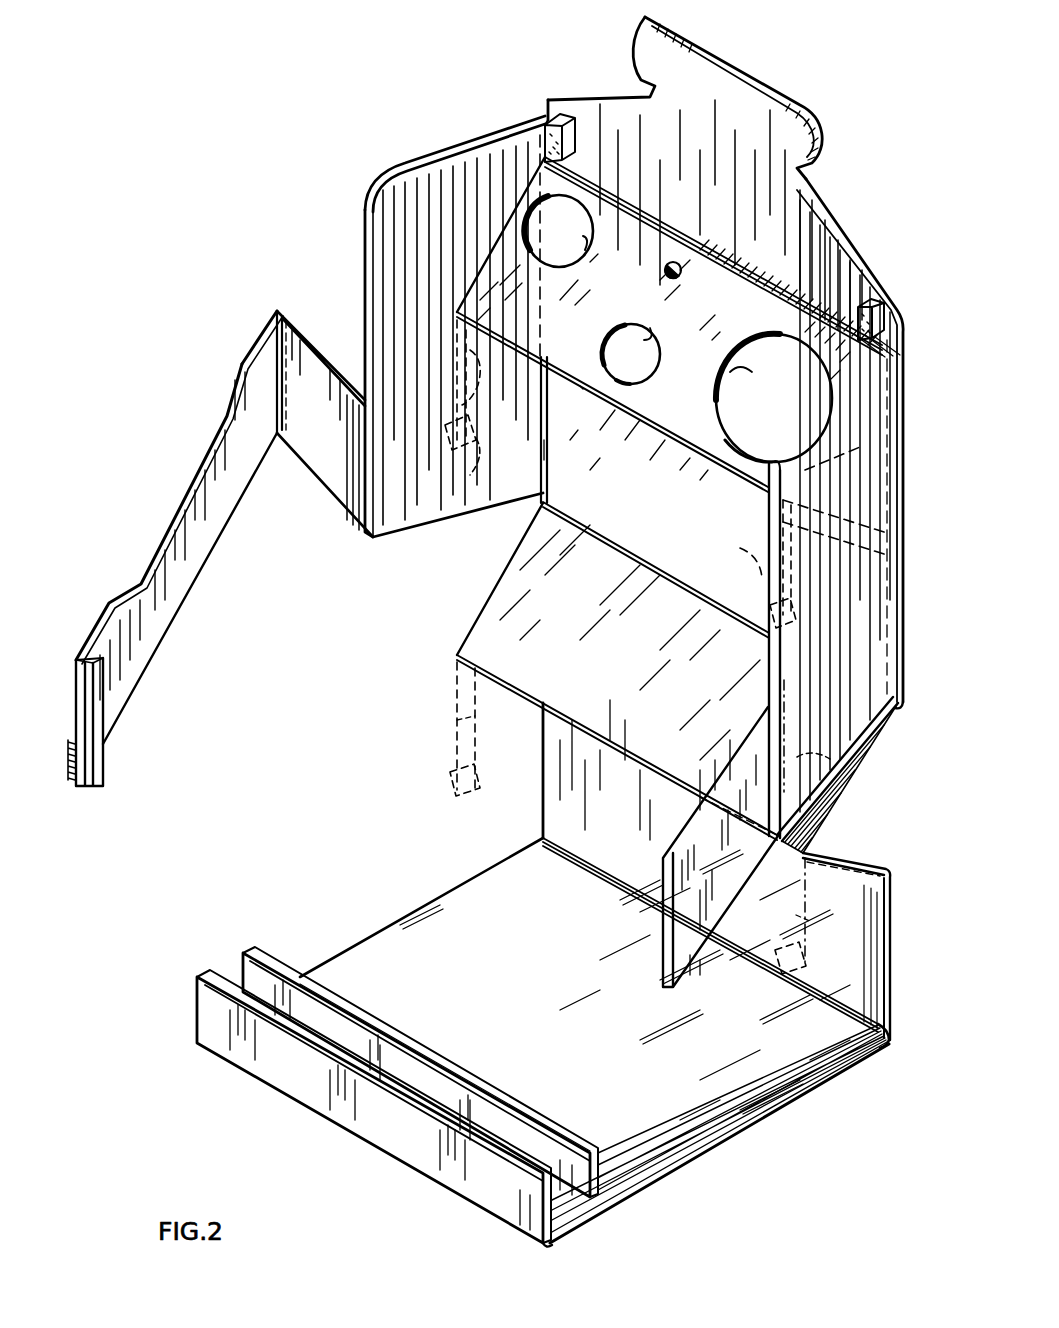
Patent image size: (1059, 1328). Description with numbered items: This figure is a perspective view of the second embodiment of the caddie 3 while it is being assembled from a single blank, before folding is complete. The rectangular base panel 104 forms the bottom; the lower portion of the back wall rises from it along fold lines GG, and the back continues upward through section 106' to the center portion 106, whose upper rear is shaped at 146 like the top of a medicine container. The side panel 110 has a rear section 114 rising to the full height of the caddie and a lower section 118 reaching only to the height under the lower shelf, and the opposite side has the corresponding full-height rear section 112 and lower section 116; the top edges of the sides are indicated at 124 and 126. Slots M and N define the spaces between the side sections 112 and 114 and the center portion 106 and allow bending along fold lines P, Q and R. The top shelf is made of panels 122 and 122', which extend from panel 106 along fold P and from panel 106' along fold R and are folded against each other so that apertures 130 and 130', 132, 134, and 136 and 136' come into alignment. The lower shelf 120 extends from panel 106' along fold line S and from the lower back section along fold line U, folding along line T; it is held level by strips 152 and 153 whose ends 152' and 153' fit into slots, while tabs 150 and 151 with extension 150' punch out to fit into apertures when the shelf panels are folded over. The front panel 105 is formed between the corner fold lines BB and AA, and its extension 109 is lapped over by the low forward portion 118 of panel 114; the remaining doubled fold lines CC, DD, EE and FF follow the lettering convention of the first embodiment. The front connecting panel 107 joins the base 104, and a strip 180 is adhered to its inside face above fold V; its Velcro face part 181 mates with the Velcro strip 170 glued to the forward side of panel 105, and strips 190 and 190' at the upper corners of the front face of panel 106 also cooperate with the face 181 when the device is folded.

The caddie 3 is at (392, 52).
The base panel 104 is at (426, 910).
The front panel 105 is at (205, 562).
The back panel section 106 is at (705, 173).
The back panel section 106' is at (626, 440).
The front connecting panel 107 is at (212, 1022).
The extension 109 is at (95, 748).
The side panel 110 is at (850, 766).
The rear section 112 is at (392, 230).
The rear section 114 is at (895, 455).
The lower section 116 is at (306, 358).
The lower section 118 is at (668, 972).
The lower shelf panel 120 is at (497, 598).
The top shelf panel 122 is at (612, 402).
The top shelf panel 122' is at (838, 501).
The top edge 124 is at (385, 183).
The top edge 126 is at (818, 420).
The aperture 130 is at (758, 392).
The aperture 130' is at (722, 548).
The aperture 132 is at (652, 320).
The aperture 134 is at (665, 272).
The aperture 136 is at (579, 231).
The aperture 136' is at (502, 377).
The shaped top portion 146 is at (743, 78).
The tab 150 is at (491, 427).
The extension 150' is at (501, 368).
The tab 151 is at (770, 574).
The strip 152 is at (423, 710).
The end 152' is at (424, 718).
The strip 153 is at (826, 920).
The end 153' is at (832, 911).
The Velcro strip 170 is at (70, 786).
The strip 180 is at (248, 972).
The face part 181 is at (419, 1040).
The strip 190 is at (594, 138).
The strip 190' is at (814, 294).
The fold line P is at (640, 212).
The fold line Q is at (581, 386).
The fold line R is at (760, 454).
The fold line S is at (599, 523).
The fold line T is at (549, 699).
The slot M is at (549, 448).
The slot N is at (896, 722).
The fold line U is at (826, 842).
The fold V is at (420, 1180).
The fold line AA is at (79, 658).
The fold line BB is at (273, 313).
The fold line CC is at (358, 442).
The fold line DD is at (545, 120).
The fold line EE is at (912, 318).
The fold line FF is at (835, 758).
The fold line GG is at (618, 900).